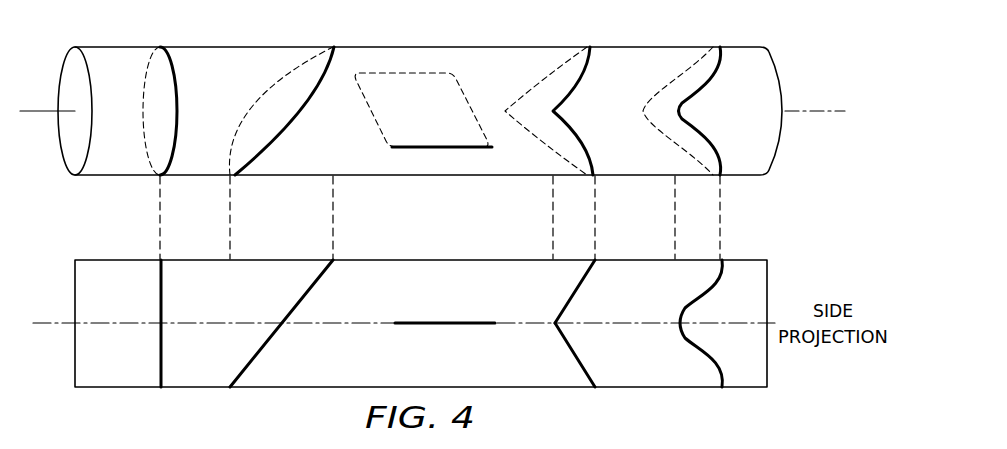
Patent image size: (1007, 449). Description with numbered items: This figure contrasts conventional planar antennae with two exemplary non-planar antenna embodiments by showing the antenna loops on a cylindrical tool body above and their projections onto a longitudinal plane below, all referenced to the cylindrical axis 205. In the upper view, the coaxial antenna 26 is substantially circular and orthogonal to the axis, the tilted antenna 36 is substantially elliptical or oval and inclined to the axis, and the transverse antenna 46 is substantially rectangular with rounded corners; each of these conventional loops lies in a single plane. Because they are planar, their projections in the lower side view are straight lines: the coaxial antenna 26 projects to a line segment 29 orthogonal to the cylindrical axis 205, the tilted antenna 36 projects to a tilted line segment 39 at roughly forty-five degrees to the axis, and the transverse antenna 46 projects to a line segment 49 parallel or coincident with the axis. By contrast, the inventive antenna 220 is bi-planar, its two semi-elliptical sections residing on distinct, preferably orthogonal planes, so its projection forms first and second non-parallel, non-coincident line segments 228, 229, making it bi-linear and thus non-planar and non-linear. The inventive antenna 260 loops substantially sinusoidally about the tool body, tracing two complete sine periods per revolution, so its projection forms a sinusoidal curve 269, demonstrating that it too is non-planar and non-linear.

The cylindrical axis 205 is at (45, 113).
The coaxial antenna 26 is at (179, 102).
The tilted antenna 36 is at (267, 155).
The transverse antenna 46 is at (441, 149).
The antenna 220 is at (575, 134).
The antenna 260 is at (705, 83).
The line segment 29 is at (160, 301).
The tilted line segment 39 is at (265, 343).
The line segment 49 is at (445, 325).
The first line segment 228 is at (578, 288).
The second line segment 229 is at (565, 345).
The sinusoidal curve 269 is at (693, 348).